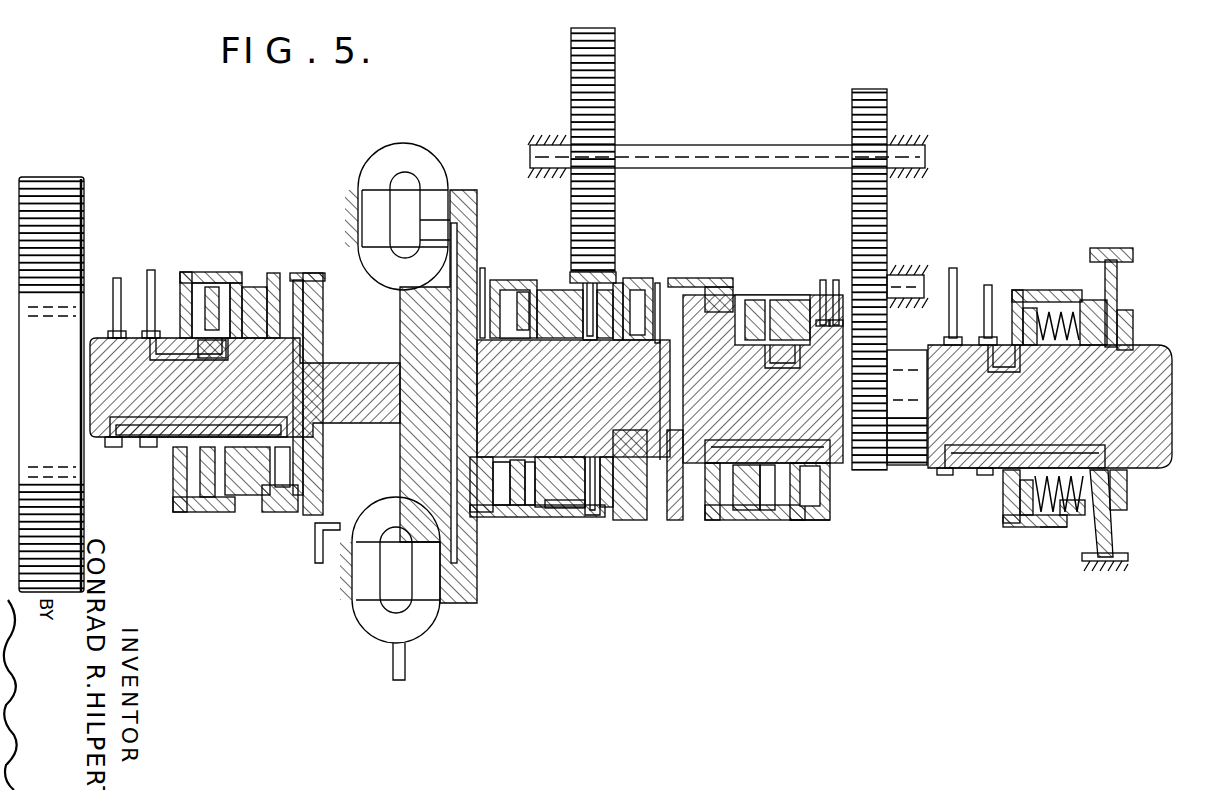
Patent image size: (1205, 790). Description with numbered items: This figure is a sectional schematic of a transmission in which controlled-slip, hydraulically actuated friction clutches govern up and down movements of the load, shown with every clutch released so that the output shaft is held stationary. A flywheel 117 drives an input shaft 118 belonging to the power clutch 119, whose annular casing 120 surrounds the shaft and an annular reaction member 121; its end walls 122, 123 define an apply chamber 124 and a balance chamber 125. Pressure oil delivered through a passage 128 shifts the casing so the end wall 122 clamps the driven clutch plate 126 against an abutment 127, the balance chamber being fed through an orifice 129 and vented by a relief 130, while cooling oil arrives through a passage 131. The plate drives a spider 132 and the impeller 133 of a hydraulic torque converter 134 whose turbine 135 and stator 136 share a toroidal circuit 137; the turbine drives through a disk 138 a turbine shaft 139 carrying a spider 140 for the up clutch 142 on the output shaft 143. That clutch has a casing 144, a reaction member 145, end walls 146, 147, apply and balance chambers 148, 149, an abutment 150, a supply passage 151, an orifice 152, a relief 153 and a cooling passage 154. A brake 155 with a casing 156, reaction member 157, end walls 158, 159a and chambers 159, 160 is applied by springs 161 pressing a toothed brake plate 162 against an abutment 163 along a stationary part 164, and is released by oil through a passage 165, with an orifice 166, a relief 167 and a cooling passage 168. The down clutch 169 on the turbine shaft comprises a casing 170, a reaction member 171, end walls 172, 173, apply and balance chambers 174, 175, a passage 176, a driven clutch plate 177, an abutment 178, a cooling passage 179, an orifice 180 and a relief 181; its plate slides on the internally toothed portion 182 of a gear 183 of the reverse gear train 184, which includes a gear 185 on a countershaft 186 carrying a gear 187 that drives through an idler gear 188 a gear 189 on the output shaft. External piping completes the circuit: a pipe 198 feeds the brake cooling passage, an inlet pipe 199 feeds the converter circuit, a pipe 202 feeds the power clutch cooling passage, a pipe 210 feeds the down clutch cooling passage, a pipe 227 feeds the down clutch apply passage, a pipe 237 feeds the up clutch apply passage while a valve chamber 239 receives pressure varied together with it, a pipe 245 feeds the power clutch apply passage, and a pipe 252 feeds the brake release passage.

The flywheel 117 is at (85, 208).
The input shaft 118 is at (100, 445).
The input power clutch 119 is at (221, 269).
The annular casing 120 is at (195, 270).
The annular reaction member 121 is at (210, 285).
The annular end wall 122 is at (255, 285).
The annular end wall 123 is at (181, 275).
The apply chamber 124 is at (228, 500).
The balance chamber 125 is at (183, 512).
The driven clutch plate 126 is at (285, 272).
The abutment 127 is at (323, 313).
The passage 128 is at (222, 350).
The orifice 129 is at (208, 360).
The relief 130 is at (150, 366).
The passage 131 is at (170, 418).
The spider 132 is at (312, 276).
The impeller 133 is at (460, 226).
The hydraulic torque converter 134 is at (393, 386).
The turbine 135 is at (447, 185).
The stator 136 is at (364, 182).
The toroidal circuit 137 is at (435, 153).
The disk 138 is at (470, 208).
The turbine shaft 139 is at (570, 424).
The spider 140 is at (772, 368).
The up clutch 142 is at (777, 274).
The output shaft 143 is at (752, 398).
The annular casing 144 is at (735, 286).
The annular reaction member 145 is at (780, 520).
The annular end wall 146 is at (732, 527).
The annular end wall 147 is at (810, 500).
The apply chamber 148 is at (758, 520).
The balance chamber 149 is at (800, 524).
The annular abutment 150 is at (678, 522).
The passage 151 is at (788, 366).
The orifice 152 is at (806, 266).
The relief 153 is at (806, 370).
The passage 154 is at (766, 442).
The brake 155 is at (1072, 311).
The annular casing 156 is at (1066, 283).
The annular reaction member 157 is at (1028, 527).
The end wall 158 is at (1087, 516).
The chamber 159 is at (1046, 520).
The end wall 159a is at (1003, 499).
The release chamber 160 is at (1005, 527).
The springs 161 is at (1060, 528).
The brake plate 162 is at (1112, 536).
The annular abutment 163 is at (1127, 495).
The stationary part 164 is at (1117, 577).
The passage 165 is at (1012, 372).
The orifice 166 is at (1075, 345).
The relief 167 is at (1142, 372).
The passage 168 is at (1052, 445).
The down clutch 169 is at (551, 313).
The annular casing 170 is at (500, 514).
The annular reaction member 171 is at (520, 508).
The end wall 172 is at (572, 512).
The end wall 173 is at (478, 487).
The apply chamber 174 is at (541, 510).
The balance chamber 175 is at (508, 512).
The passage 176 is at (515, 340).
The driven clutch plate 177 is at (606, 518).
The annular abutment 178 is at (636, 521).
The passage 179 is at (634, 385).
The orifice 180 is at (568, 342).
The relief 181 is at (492, 375).
The internally toothed portion 182 is at (612, 275).
The gear 183 is at (640, 277).
The reverse gear train 184 is at (739, 249).
The gear 185 is at (613, 193).
The countershaft 186 is at (748, 144).
The gear 187 is at (888, 102).
The idler gear 188 is at (888, 247).
The gear 189 is at (888, 346).
The pipe 198 is at (953, 268).
The inlet pipe 199 is at (316, 552).
The pipe 202 is at (113, 280).
The pipe 210 is at (660, 282).
The pipe 227 is at (482, 268).
The pipe 237 is at (835, 278).
The chamber 239 is at (822, 278).
The pipe 245 is at (150, 270).
The pipe 252 is at (988, 284).